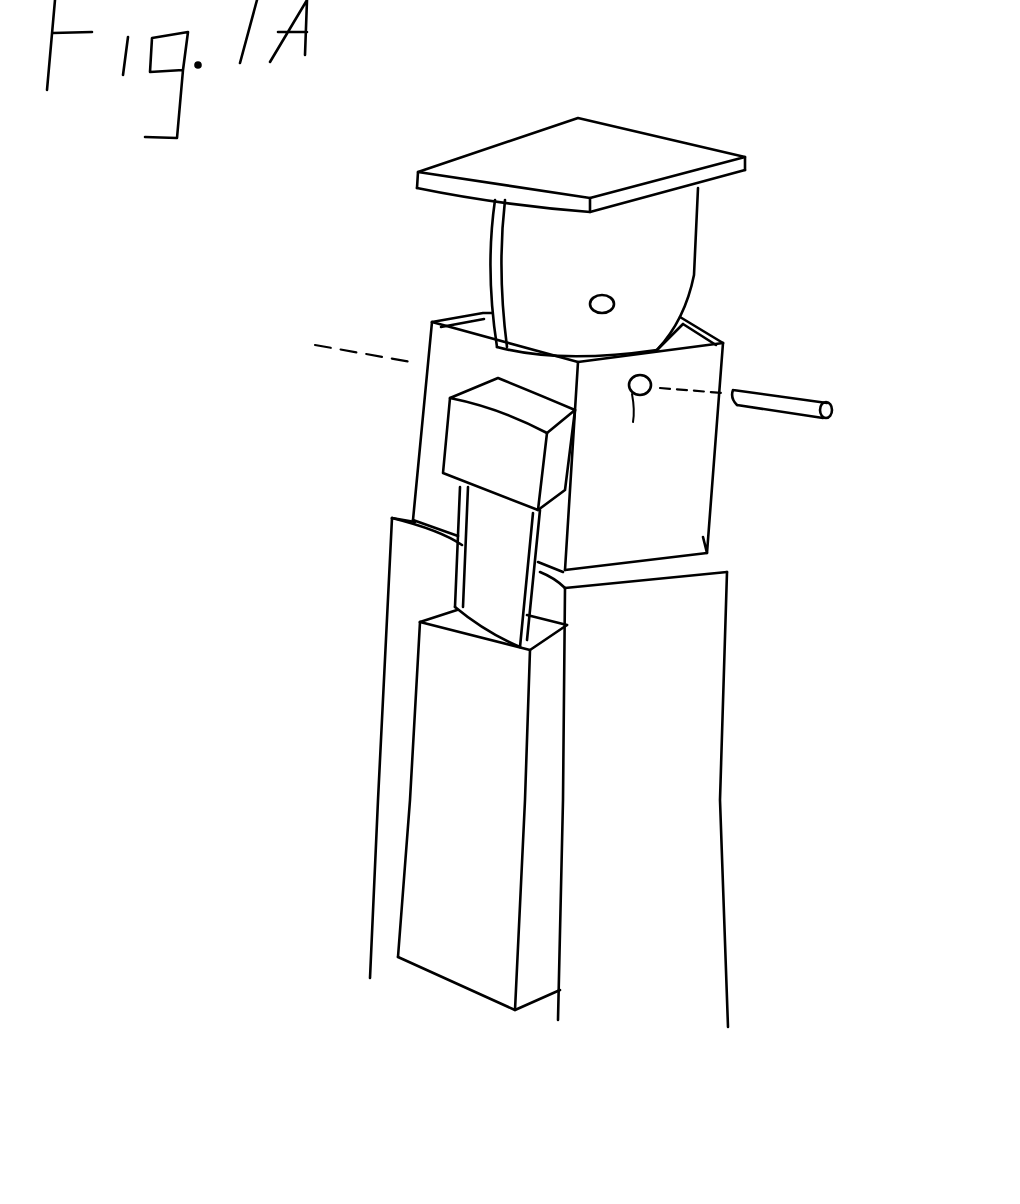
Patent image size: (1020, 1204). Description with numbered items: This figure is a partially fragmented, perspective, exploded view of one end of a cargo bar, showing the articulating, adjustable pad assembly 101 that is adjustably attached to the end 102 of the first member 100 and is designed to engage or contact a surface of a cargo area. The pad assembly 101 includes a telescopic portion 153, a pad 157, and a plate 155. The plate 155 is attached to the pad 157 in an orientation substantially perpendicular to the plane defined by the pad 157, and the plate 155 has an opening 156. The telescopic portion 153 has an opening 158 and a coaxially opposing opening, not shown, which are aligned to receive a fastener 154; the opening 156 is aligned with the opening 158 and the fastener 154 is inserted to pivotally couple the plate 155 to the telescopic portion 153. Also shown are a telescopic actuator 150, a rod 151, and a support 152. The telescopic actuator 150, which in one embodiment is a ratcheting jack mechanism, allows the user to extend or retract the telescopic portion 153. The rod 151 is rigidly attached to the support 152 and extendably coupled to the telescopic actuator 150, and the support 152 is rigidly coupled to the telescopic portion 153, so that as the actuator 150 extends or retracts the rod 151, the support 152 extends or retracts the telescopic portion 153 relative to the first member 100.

The first member 100 is at (723, 810).
The articulating, adjustable pad assembly 101 is at (310, 432).
The end 102 is at (702, 652).
The telescopic actuator 150 is at (425, 815).
The rod 151 is at (462, 580).
The support 152 is at (443, 450).
The telescopic portion 153 is at (692, 473).
The fastener 154 is at (800, 402).
The plate 155 is at (682, 246).
The opening 156 is at (616, 300).
The pad 157 is at (683, 148).
The opening 158 is at (655, 412).